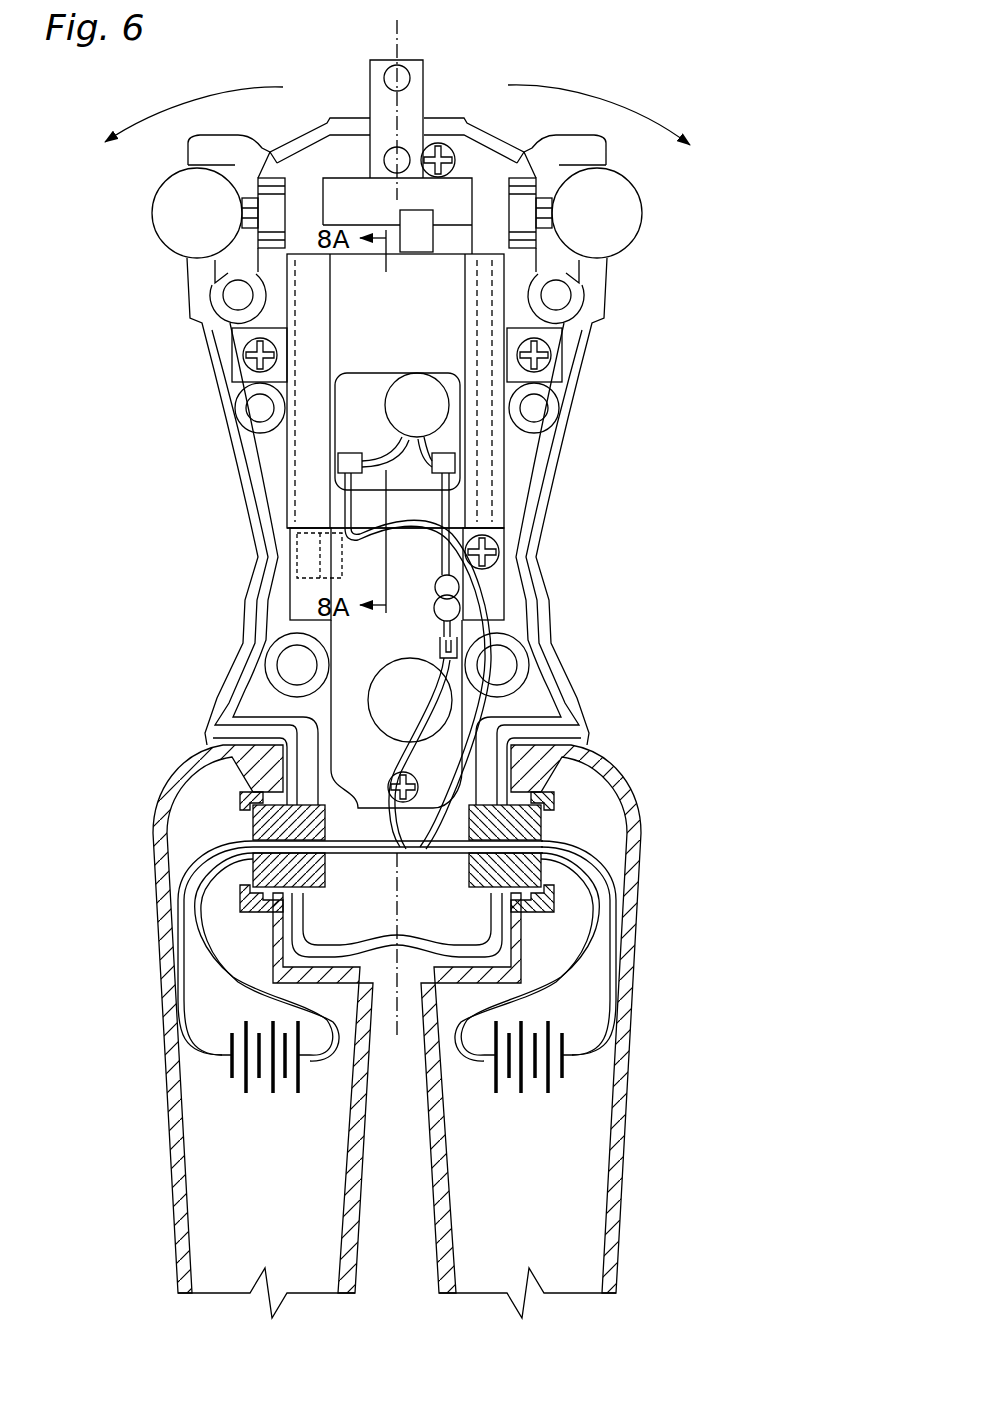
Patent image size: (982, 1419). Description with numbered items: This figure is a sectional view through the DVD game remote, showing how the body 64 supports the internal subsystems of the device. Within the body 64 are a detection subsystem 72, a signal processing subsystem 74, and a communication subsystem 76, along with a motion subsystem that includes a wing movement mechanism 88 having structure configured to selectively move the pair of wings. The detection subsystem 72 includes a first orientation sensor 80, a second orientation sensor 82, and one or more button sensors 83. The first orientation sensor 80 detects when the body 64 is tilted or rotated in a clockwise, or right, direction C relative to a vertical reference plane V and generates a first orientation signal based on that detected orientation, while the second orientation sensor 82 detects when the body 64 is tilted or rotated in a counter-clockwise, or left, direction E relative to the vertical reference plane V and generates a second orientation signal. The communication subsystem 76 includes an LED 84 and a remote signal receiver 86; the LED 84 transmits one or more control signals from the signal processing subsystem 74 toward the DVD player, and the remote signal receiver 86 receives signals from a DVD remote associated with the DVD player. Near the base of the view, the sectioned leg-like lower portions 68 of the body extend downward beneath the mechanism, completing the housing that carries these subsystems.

The body 64 is at (219, 447).
The leg members 68 is at (212, 1167).
The detection subsystem 72 is at (303, 588).
The signal processing subsystem 74 is at (419, 766).
The communication subsystem 76 is at (406, 114).
The first orientation sensor 80 is at (297, 560).
The second orientation sensor 82 is at (325, 530).
The button sensors 83 is at (383, 328).
The LED 84 is at (388, 148).
The remote signal receiver 86 is at (408, 80).
The wing movement mechanism 88 is at (379, 303).
The vertical reference plane V is at (407, 53).
The clockwise direction C is at (190, 100).
The counter-clockwise direction E is at (608, 102).